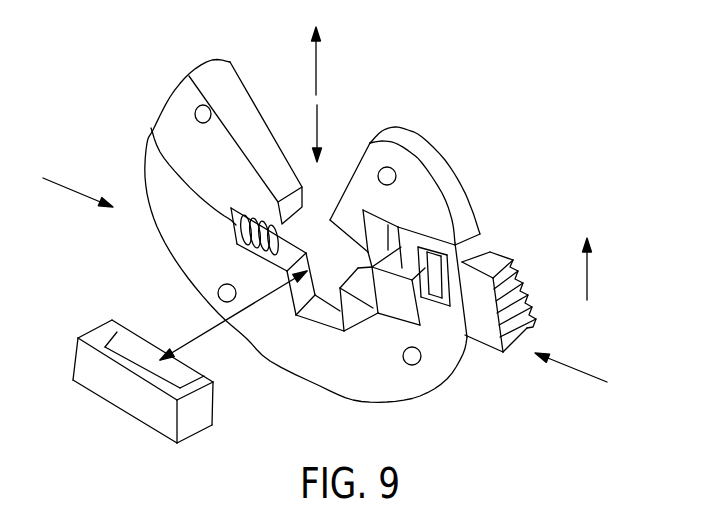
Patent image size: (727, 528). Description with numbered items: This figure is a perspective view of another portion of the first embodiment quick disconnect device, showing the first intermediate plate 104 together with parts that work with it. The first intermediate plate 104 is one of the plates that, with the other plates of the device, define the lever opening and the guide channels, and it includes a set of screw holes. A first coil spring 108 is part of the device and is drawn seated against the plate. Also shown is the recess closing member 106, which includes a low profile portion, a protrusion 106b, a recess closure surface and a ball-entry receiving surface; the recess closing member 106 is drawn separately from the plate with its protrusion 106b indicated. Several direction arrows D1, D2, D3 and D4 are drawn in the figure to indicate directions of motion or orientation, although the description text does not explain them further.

The first intermediate plate 104 is at (186, 82).
The first coil spring 108 is at (149, 134).
The recess closing member 106 is at (143, 390).
The protrusion 106b is at (152, 366).
The direction D1 is at (314, 62).
The direction D2 is at (575, 367).
The direction D3 is at (319, 128).
The direction D4 is at (75, 188).